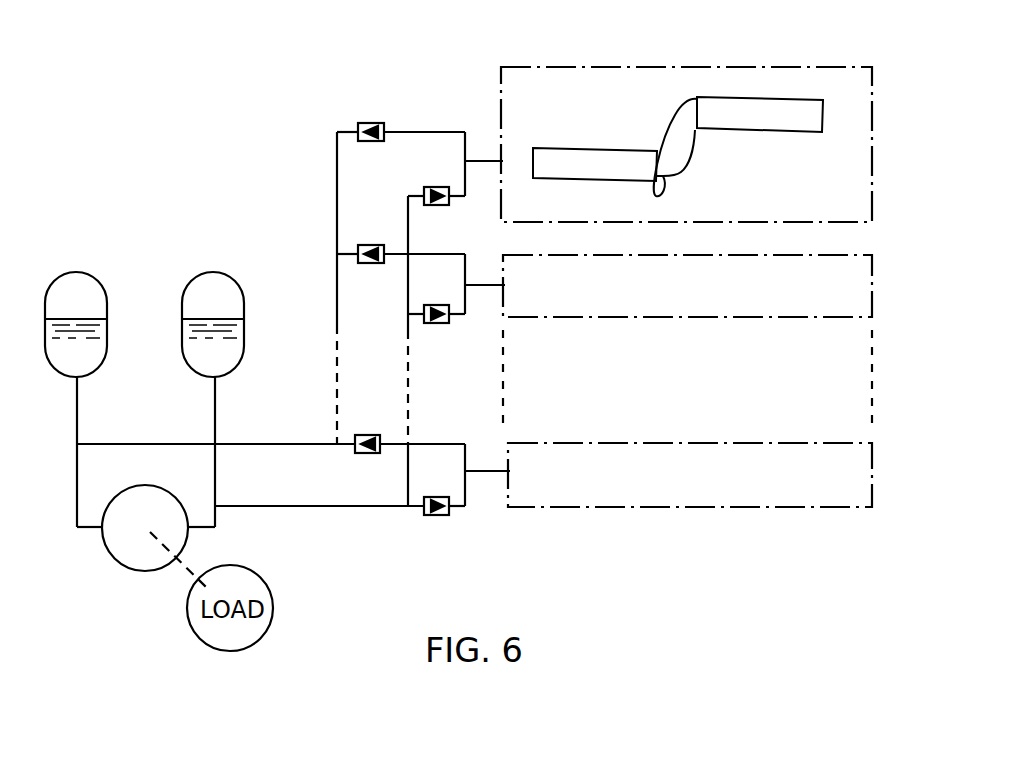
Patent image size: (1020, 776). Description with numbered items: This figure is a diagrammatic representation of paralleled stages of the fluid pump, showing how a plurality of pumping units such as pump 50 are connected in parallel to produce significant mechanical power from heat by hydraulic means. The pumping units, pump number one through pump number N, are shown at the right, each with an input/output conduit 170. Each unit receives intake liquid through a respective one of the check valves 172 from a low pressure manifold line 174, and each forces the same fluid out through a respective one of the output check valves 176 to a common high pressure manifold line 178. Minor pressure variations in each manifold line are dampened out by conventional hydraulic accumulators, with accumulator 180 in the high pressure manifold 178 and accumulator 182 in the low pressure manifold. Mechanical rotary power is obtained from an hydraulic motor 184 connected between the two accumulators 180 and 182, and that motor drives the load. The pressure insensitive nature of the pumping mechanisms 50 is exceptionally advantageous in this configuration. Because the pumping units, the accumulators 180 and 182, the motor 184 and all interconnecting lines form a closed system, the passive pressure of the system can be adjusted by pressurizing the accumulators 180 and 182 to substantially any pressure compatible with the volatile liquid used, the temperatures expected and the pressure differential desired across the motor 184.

The pump 50 is at (745, 67).
The input/output conduit 170 is at (487, 160).
The check valve 172 is at (442, 188).
The low pressure manifold line 174 is at (362, 508).
The output check valve 176 is at (370, 123).
The high pressure manifold line 178 is at (336, 310).
The hydraulic accumulator 180 is at (80, 272).
The hydraulic accumulator 182 is at (218, 272).
The hydraulic motor 184 is at (154, 536).